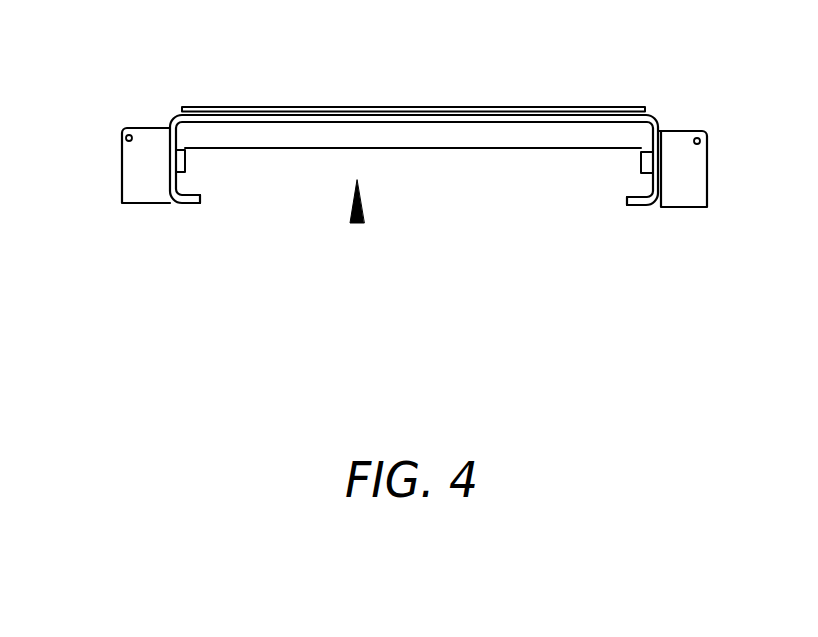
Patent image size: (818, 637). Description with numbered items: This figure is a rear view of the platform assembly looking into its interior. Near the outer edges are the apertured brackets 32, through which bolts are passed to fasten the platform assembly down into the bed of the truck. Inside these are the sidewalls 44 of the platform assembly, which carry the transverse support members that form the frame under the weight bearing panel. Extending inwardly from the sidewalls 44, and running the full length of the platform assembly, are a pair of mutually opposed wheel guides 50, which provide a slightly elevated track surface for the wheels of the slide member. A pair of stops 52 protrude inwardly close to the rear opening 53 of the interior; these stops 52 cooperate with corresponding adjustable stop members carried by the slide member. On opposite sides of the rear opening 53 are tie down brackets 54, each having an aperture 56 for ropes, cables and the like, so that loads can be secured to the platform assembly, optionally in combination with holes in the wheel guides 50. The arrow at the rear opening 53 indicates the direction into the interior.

The apertured bracket 32 is at (130, 162).
The sidewall 44 is at (207, 112).
The wheel guide 50 is at (195, 194).
The stop 52 is at (180, 163).
The rear opening 53 is at (357, 223).
The tie down bracket 54 is at (693, 178).
The aperture 56 is at (700, 140).